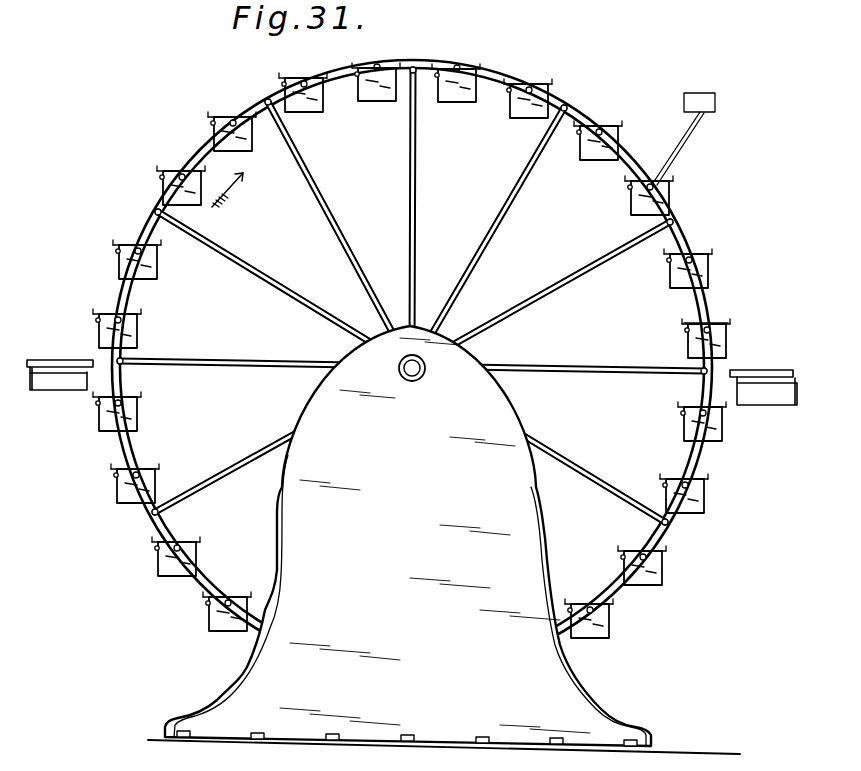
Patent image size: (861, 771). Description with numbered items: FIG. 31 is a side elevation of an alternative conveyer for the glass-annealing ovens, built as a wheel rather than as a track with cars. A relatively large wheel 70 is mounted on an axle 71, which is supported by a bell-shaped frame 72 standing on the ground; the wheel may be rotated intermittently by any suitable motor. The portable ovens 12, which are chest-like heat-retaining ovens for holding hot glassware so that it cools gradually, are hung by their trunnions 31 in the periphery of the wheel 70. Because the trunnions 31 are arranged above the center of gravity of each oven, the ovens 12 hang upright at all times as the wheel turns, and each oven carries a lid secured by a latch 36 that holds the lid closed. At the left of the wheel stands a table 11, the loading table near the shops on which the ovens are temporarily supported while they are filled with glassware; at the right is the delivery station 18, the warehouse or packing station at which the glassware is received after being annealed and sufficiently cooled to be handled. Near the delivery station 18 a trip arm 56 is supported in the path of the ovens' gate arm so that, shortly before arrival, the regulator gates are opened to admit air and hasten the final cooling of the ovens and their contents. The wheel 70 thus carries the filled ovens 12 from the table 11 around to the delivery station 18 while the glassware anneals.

The table 11 is at (45, 360).
The portable oven 12 is at (322, 108).
The delivery station 18 is at (765, 372).
The trunnion 31 is at (709, 320).
The latch 36 is at (728, 322).
The trip arm 56 is at (680, 154).
The wheel 70 is at (201, 158).
The axle 71 is at (426, 371).
The frame 72 is at (408, 536).